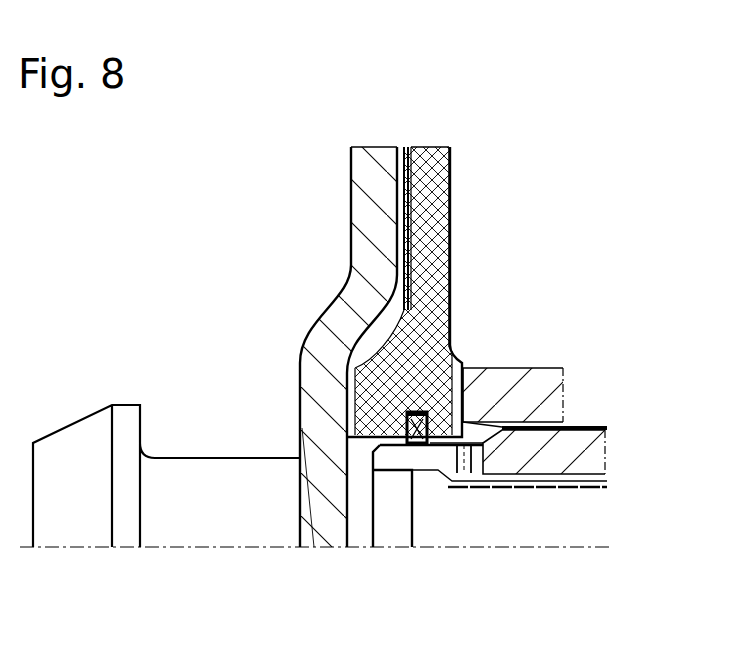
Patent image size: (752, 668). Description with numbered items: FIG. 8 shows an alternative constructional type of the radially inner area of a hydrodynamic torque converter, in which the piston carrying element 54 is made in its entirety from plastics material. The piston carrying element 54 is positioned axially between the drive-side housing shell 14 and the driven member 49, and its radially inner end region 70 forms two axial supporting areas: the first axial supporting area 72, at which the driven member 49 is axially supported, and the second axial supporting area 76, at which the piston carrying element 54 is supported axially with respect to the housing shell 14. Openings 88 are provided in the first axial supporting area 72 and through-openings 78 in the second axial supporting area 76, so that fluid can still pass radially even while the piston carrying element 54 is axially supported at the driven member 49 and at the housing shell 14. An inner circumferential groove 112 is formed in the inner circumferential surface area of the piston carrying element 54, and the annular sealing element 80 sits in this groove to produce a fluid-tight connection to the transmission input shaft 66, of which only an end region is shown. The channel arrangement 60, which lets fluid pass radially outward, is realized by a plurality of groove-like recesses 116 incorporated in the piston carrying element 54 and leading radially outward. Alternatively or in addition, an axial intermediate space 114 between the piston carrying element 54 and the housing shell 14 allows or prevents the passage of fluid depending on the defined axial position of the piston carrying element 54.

The housing shell 14 is at (345, 292).
The channel arrangement 60 is at (390, 195).
The second axial supporting area 76 is at (340, 395).
The through-openings 78 is at (345, 420).
The axial intermediate space 114 is at (370, 146).
The piston carrying element 54 is at (452, 180).
The groove-like recesses 116 is at (452, 228).
The radially inner end region 70 is at (472, 328).
The first axial supporting area 72 is at (468, 356).
The annular sealing element 80 is at (415, 447).
The openings 88 is at (565, 377).
The driven member 49 is at (552, 397).
The transmission input shaft 66 is at (578, 443).
The inner circumferential groove 112 is at (378, 437).